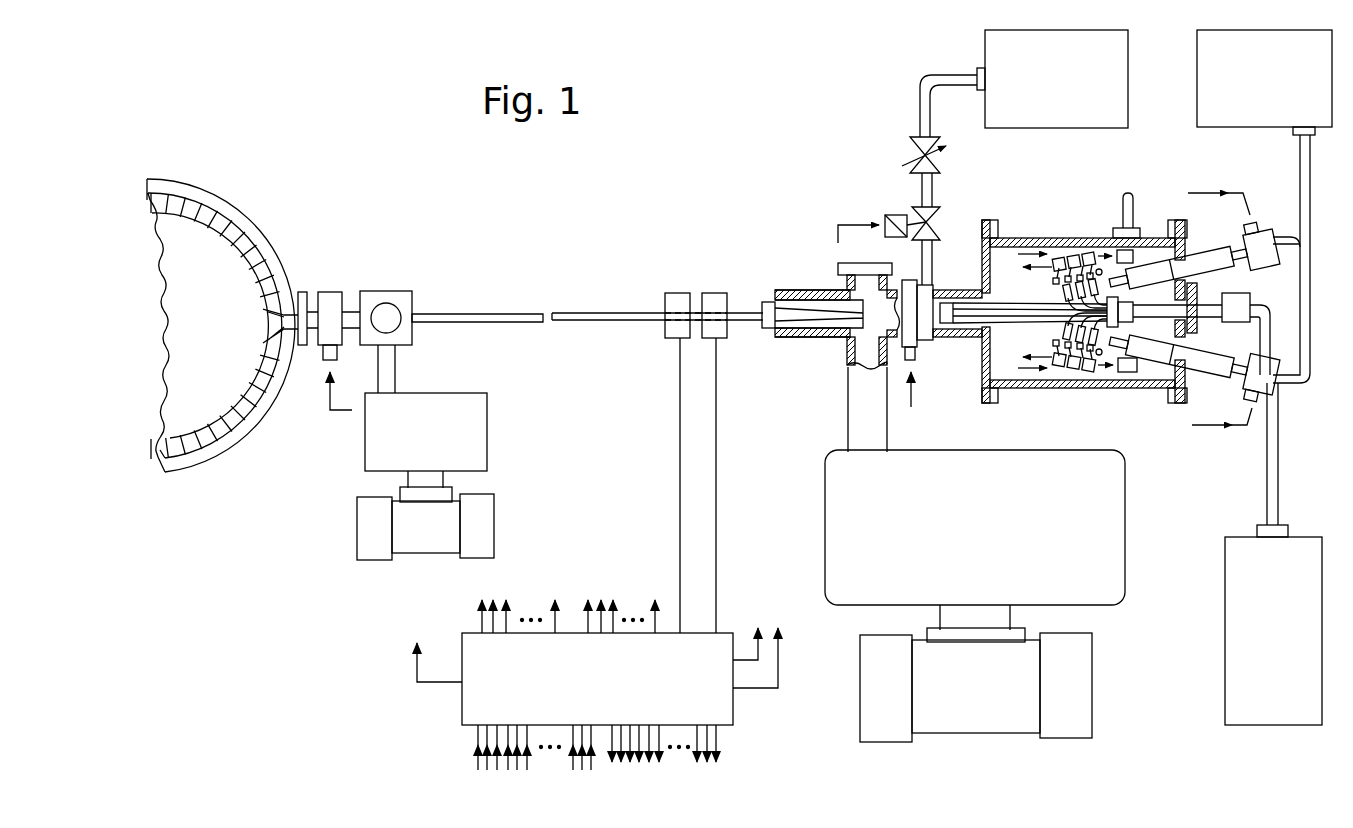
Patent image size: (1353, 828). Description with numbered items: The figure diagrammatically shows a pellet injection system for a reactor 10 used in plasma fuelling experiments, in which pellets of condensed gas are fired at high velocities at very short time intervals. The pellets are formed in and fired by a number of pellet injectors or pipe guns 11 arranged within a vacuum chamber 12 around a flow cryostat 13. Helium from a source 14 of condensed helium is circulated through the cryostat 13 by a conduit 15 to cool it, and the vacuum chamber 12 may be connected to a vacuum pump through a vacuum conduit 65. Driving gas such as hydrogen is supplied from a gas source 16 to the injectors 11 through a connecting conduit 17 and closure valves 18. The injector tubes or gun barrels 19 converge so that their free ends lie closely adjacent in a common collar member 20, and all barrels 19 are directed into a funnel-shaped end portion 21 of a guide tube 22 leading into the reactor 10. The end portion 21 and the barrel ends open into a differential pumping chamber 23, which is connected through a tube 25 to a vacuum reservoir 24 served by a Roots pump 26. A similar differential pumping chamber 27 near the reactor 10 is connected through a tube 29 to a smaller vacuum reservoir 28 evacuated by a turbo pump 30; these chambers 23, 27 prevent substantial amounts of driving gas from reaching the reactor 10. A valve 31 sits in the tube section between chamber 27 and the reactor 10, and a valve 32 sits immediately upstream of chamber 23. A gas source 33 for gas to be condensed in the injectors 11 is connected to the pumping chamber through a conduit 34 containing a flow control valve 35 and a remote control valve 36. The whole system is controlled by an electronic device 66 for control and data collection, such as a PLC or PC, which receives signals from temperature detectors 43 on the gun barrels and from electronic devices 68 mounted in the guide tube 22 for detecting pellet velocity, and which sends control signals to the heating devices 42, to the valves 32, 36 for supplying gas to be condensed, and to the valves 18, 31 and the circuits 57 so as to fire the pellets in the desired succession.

The reactor 10 is at (239, 198).
The valve 31 is at (331, 292).
The differential pumping chamber 27 is at (396, 291).
The tube 29 is at (398, 368).
The vacuum reservoir 28 is at (478, 438).
The turbo pump 30 is at (487, 524).
The guide tube 22 is at (484, 313).
The electronic devices 68 is at (715, 293).
The funnel-shaped end portion 21 is at (807, 303).
The differential pumping chamber 23 is at (862, 288).
The tube 25 is at (848, 413).
The vacuum reservoir 24 is at (833, 541).
The Roots pump 26 is at (1078, 684).
The valve 32 is at (915, 340).
The collar member 20 is at (951, 291).
The injector tubes or gun barrels 19 is at (988, 347).
The remote control valve 36 is at (935, 212).
The flow control valve 35 is at (912, 146).
The conduit 34 is at (920, 92).
The gas source 33 is at (990, 45).
The gas source 16 is at (1203, 43).
The connecting conduit 17 is at (1300, 157).
The vacuum conduit 65 is at (1124, 205).
The vacuum chamber 12 is at (1070, 238).
The electrical heating device 42 is at (1056, 282).
The temperature detector 43 is at (1055, 347).
The circuits 57 is at (1127, 372).
The flow cryostat 13 is at (1203, 289).
The pellet injectors or pipe guns 11 is at (1208, 252).
The closure valves 18 is at (1263, 233).
The conduit 15 is at (1267, 484).
The source of condensed helium 14 is at (1232, 641).
The electronic device for control and data collection 66 is at (610, 693).